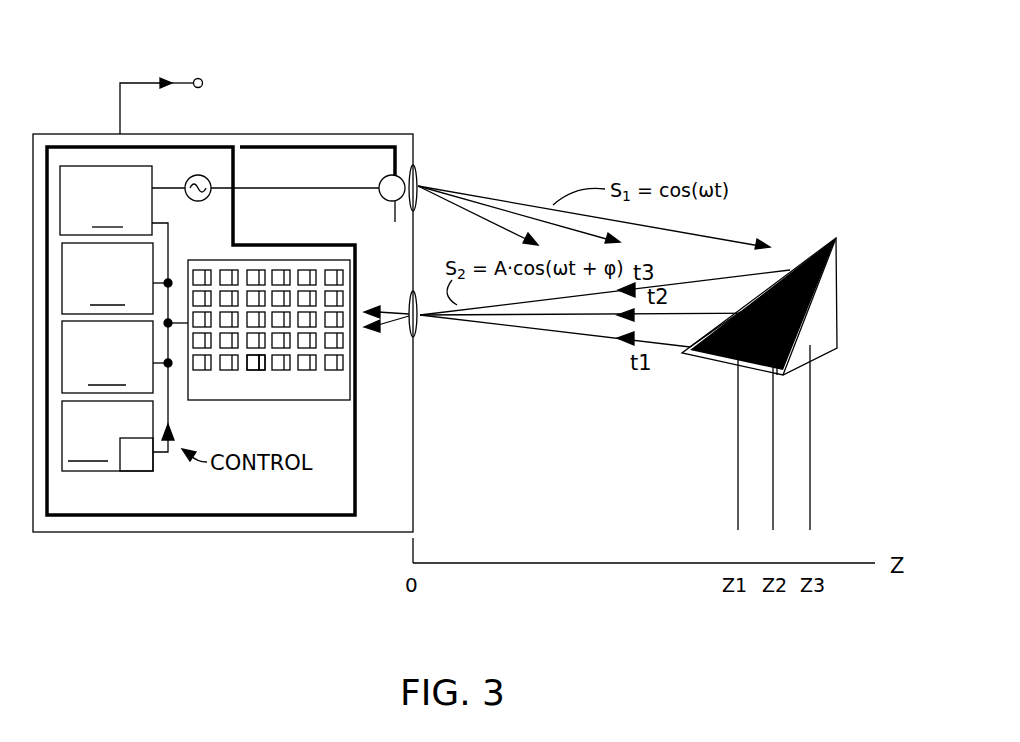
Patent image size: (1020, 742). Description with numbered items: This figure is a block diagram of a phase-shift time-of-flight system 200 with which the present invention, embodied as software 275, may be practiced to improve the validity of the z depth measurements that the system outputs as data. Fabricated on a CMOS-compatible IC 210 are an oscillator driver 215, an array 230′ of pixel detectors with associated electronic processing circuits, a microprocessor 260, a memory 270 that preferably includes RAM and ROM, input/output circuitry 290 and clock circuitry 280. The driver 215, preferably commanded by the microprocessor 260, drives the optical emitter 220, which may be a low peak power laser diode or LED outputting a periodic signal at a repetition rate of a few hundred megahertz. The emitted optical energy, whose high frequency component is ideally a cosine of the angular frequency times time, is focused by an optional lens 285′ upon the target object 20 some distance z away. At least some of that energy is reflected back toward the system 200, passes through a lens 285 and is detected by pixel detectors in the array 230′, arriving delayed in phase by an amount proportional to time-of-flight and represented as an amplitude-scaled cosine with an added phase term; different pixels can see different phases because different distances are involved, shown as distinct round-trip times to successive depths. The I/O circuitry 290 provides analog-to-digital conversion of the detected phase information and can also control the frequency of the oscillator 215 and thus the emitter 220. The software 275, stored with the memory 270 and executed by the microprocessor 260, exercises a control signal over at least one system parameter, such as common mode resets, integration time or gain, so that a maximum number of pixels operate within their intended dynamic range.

The TOF system 200 is at (78, 104).
The CMOS-compatible IC 210 is at (340, 242).
The driver 215 is at (202, 174).
The emitter 220 is at (382, 177).
The array 230′ is at (208, 258).
The microprocessor 260 is at (107, 278).
The memory 270 is at (107, 436).
The software 275 is at (143, 466).
The clock circuitry 280 is at (107, 357).
The lens 285 is at (438, 343).
The lens 285′ is at (423, 176).
The I/O circuitry 290 is at (106, 200).
The target object 20 is at (858, 262).